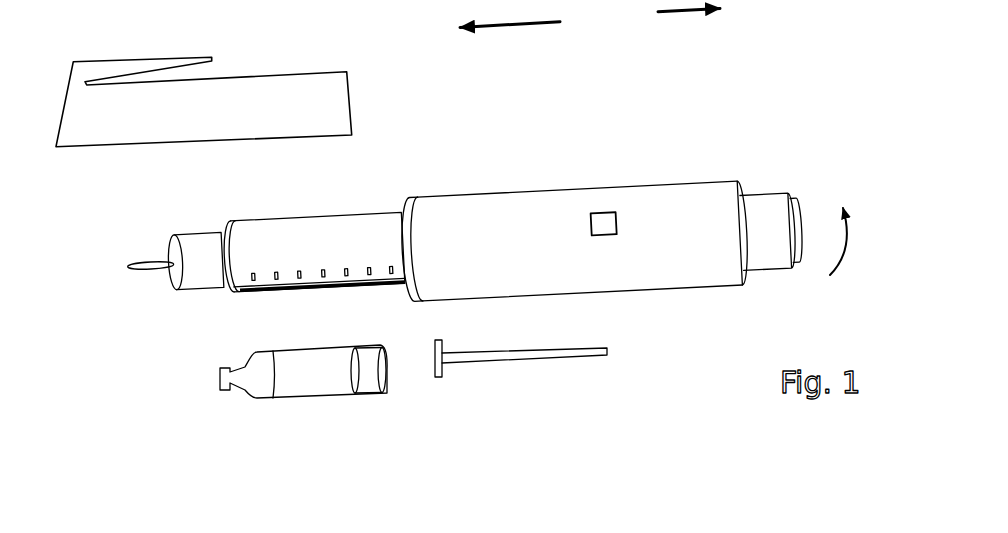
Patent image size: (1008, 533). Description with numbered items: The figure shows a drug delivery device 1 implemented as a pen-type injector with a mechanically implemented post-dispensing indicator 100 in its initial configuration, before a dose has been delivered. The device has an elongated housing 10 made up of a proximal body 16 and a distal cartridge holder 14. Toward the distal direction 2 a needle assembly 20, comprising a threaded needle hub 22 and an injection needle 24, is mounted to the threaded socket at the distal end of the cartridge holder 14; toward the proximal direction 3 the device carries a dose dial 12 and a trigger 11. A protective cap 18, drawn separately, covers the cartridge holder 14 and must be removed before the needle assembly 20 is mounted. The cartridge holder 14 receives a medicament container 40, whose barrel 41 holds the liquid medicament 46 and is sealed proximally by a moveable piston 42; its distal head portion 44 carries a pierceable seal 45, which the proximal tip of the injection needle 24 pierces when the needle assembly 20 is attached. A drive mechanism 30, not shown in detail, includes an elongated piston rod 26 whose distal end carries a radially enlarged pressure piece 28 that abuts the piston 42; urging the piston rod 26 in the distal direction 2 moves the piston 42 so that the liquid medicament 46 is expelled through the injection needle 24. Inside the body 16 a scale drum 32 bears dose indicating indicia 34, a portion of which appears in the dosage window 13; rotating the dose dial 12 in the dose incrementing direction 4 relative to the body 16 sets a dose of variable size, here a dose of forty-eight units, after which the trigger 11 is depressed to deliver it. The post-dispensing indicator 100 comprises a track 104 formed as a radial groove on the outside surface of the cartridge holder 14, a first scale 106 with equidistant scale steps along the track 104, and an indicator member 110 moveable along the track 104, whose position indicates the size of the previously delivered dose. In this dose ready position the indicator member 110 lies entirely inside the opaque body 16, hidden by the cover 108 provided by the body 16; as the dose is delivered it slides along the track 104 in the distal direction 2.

The drug delivery device 1 is at (680, 134).
The distal direction 2 is at (495, 28).
The proximal direction 3 is at (682, 13).
The dose incrementing direction 4 is at (847, 241).
The housing 10 is at (517, 172).
The trigger 11 is at (795, 217).
The dose dial 12 is at (763, 203).
The dosage window 13 is at (609, 239).
The cartridge holder 14 is at (297, 225).
The body 16 is at (465, 210).
The protective cap 18 is at (257, 85).
The needle assembly 20 is at (164, 212).
The needle hub 22 is at (202, 245).
The injection needle 24 is at (162, 260).
The piston rod 26 is at (507, 357).
The pressure piece 28 is at (442, 375).
The drive mechanism 30 is at (551, 271).
The scale drum 32 is at (622, 201).
The dose indicating indicia 34 is at (602, 216).
The medicament container 40 is at (270, 411).
The barrel 41 is at (300, 400).
The piston 42 is at (372, 387).
The head portion 44 is at (236, 404).
The pierceable seal 45 is at (222, 378).
The liquid medicament 46 is at (291, 384).
The post-dispensing indicator 100 is at (294, 306).
The track 104 is at (247, 295).
The first scale 106 is at (334, 234).
The cover 108 is at (437, 285).
The indicator member 110 is at (400, 292).